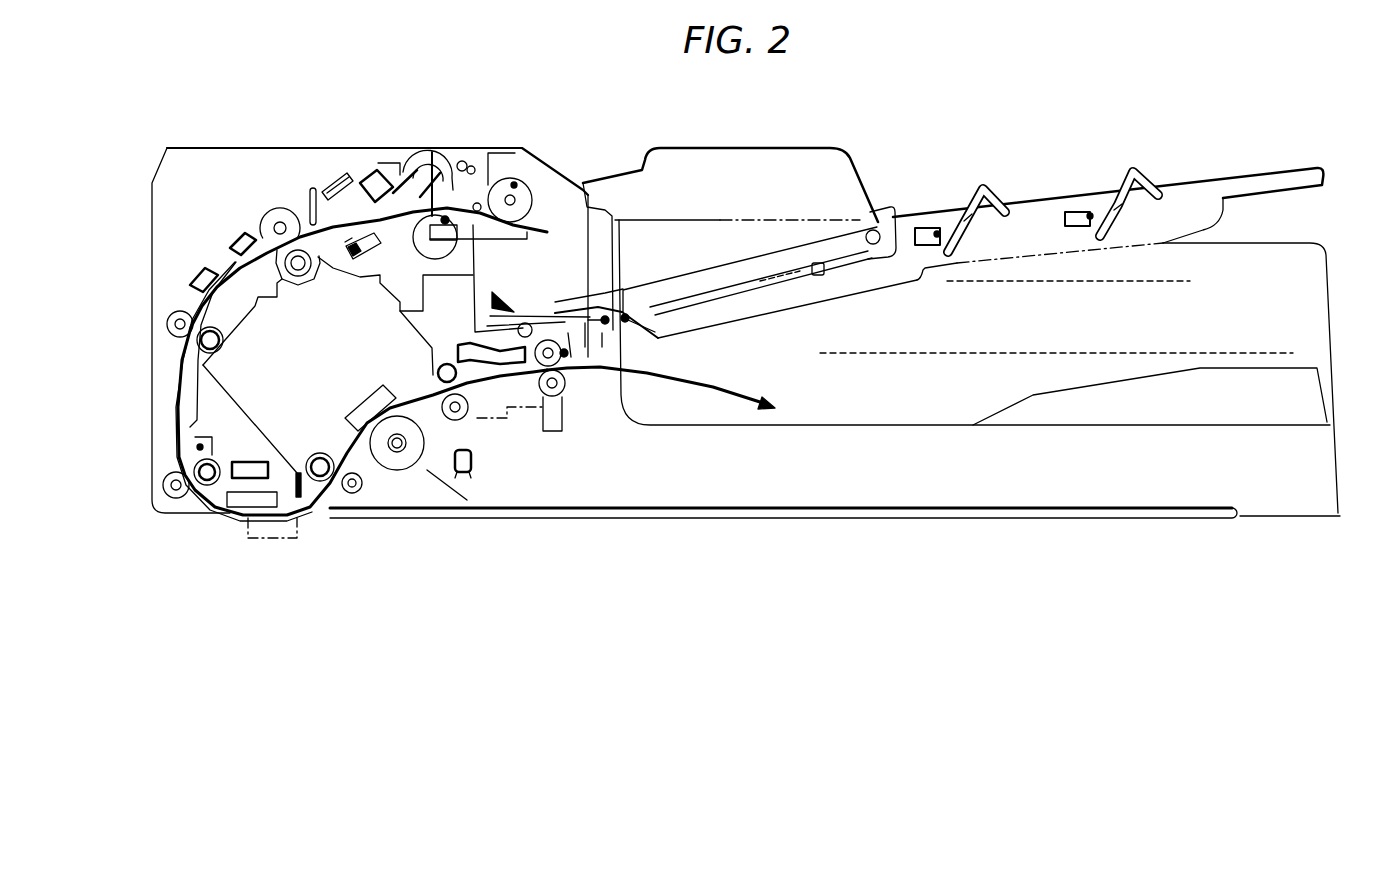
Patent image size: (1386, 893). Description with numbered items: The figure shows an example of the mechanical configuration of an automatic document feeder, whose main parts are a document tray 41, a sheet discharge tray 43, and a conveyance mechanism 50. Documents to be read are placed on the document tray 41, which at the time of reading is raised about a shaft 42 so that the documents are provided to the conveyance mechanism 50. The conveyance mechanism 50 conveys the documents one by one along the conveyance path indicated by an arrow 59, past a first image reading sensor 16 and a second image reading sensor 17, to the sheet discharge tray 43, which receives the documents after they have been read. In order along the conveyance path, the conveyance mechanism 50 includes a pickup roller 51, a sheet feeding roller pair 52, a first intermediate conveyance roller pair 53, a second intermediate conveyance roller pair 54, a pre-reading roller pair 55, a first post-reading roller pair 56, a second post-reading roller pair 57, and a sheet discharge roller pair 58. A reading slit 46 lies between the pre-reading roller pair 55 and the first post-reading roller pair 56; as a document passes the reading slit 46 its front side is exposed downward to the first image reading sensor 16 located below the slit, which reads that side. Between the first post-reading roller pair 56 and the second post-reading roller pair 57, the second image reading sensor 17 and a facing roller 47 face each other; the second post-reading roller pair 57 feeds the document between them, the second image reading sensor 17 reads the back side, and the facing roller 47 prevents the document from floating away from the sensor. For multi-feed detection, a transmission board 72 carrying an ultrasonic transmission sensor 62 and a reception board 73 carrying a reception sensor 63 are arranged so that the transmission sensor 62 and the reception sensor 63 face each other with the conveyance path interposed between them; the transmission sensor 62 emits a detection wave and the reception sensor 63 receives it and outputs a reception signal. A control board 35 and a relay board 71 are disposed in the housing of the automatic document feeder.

The first image reading sensor 16 is at (278, 538).
The second image reading sensor 17 is at (362, 398).
The control board 35 is at (1292, 351).
The document tray 41 is at (690, 268).
The shaft 42 is at (876, 230).
The sheet discharge tray 43 is at (807, 423).
The reading slit 46 is at (330, 517).
The facing roller 47 is at (407, 473).
The conveyance mechanism 50 is at (160, 416).
The pickup roller 51 is at (514, 185).
The sheet feeding roller pair 52 is at (433, 165).
The first intermediate conveyance roller pair 53 is at (270, 212).
The second intermediate conveyance roller pair 54 is at (168, 323).
The pre-reading roller pair 55 is at (164, 484).
The first post-reading roller pair 56 is at (353, 503).
The second post-reading roller pair 57 is at (467, 418).
The sheet discharge roller pair 58 is at (553, 397).
The arrow 59 is at (697, 383).
The transmission sensor 62 is at (360, 177).
The reception sensor 63 is at (345, 242).
The relay board 71 is at (1030, 281).
The transmission board 72 is at (333, 180).
The reception board 73 is at (365, 258).